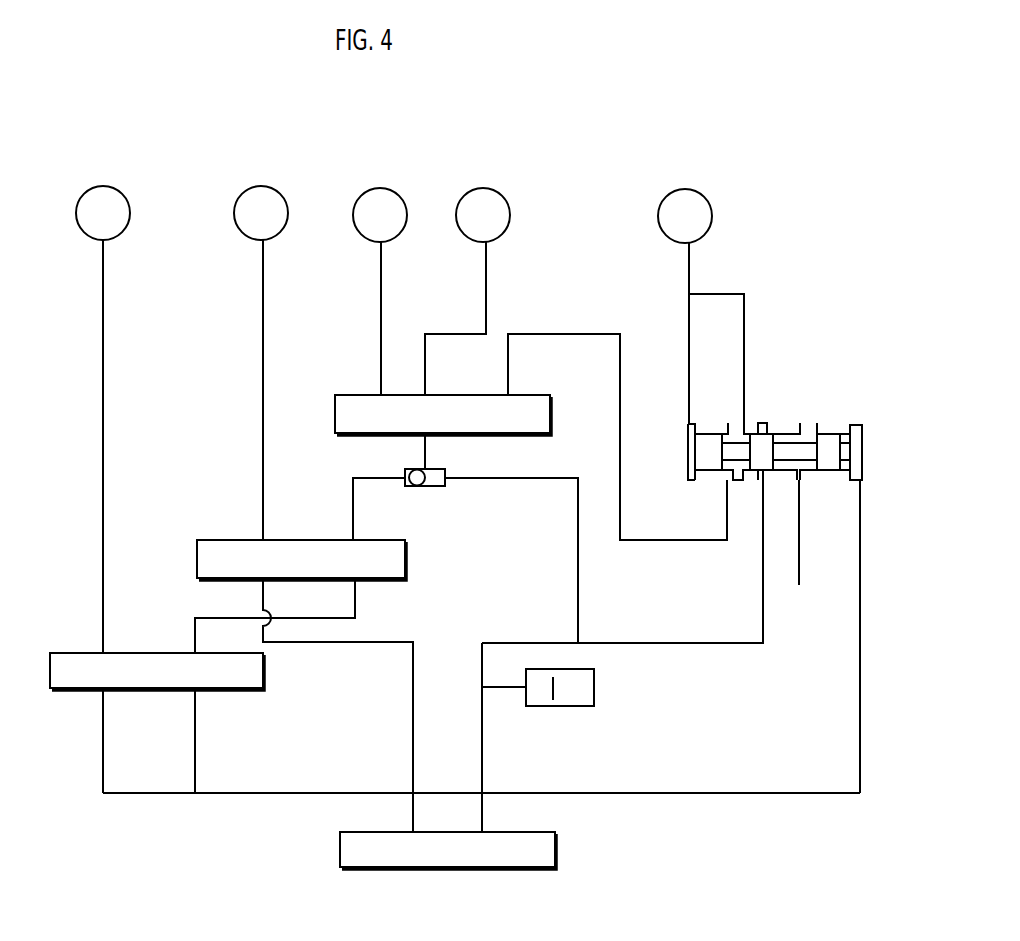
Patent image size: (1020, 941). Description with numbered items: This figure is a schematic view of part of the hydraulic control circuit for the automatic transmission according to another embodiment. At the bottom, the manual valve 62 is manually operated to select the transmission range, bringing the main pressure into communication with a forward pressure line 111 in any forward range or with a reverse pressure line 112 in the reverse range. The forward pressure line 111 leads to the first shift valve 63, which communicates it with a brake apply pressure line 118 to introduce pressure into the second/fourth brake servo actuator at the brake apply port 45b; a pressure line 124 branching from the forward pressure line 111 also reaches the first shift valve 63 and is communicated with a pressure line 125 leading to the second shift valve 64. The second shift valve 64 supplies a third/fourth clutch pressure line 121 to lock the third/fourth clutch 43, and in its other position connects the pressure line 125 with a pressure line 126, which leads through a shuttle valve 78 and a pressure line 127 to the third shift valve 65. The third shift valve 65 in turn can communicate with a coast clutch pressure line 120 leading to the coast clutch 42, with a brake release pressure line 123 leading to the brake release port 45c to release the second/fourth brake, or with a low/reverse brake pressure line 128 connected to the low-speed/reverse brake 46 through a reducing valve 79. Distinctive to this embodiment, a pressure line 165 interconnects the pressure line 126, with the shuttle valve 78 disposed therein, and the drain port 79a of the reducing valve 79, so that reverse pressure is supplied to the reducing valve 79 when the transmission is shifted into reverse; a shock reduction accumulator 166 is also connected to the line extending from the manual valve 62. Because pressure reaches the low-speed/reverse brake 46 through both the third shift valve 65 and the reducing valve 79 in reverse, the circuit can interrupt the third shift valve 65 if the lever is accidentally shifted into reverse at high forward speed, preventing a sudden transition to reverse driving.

The brake apply port 45b is at (100, 186).
The 3/4 clutch 43 is at (262, 186).
The brake release port 45c is at (383, 188).
The coast clutch 42 is at (487, 188).
The low-speed/reverse brake 46 is at (697, 190).
The brake apply pressure line 118 is at (103, 565).
The 3/4 clutch pressure line 121 is at (262, 388).
The brake release pressure line 123 is at (382, 316).
The coast clutch pressure line 120 is at (487, 313).
The low/reverse brake pressure line 128 is at (690, 263).
The third shift valve 65 is at (348, 395).
The pressure line 127 is at (425, 450).
The shuttle valve 78 is at (415, 487).
The pressure line 126 is at (353, 503).
The second shift valve 64 is at (222, 540).
The pressure line 125 is at (243, 615).
The first shift valve 63 is at (62, 692).
The pressure line 124 is at (200, 767).
The forward pressure line 111 is at (282, 797).
The reverse pressure line 112 is at (483, 773).
The pressure line 165 is at (750, 648).
The shock reduction accumulator 166 is at (595, 687).
The manual valve 62 is at (420, 870).
The reducing valve 79 is at (862, 457).
The drain port 79a is at (758, 488).